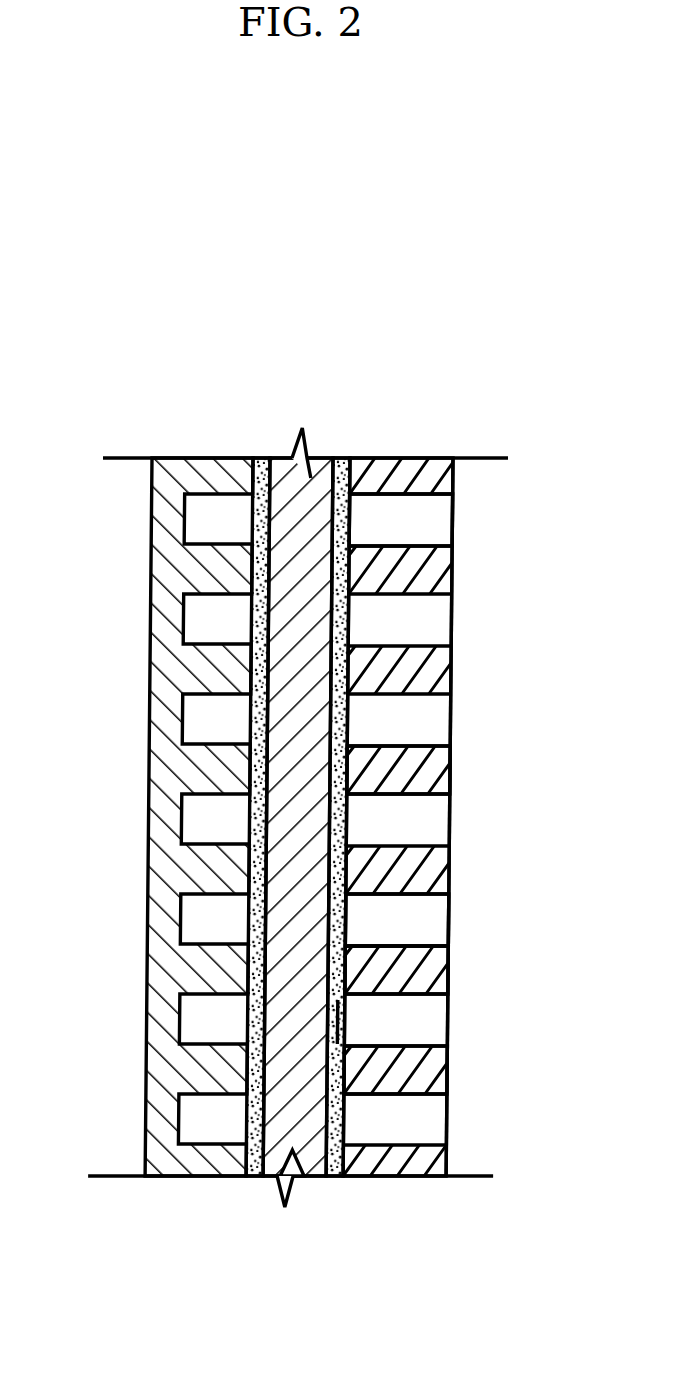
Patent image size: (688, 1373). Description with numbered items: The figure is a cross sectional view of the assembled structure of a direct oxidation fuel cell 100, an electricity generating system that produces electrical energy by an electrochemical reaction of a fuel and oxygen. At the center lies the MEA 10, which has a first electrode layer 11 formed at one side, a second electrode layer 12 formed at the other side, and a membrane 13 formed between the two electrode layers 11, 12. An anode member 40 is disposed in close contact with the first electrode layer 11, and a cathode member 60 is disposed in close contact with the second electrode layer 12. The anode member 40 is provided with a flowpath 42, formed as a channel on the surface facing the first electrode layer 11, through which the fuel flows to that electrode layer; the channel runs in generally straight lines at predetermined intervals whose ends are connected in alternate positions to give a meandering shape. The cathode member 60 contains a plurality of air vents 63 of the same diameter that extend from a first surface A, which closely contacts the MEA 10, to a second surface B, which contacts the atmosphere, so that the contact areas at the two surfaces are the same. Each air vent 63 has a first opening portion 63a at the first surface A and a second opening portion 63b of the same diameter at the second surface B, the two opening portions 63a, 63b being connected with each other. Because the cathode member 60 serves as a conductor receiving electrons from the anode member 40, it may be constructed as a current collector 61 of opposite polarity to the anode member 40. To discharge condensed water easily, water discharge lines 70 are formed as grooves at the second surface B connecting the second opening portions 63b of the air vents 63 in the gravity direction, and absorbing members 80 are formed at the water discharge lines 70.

The direct oxidation fuel cell 100 is at (332, 332).
The MEA 10 is at (302, 875).
The first electrode layer 11 is at (254, 1177).
The second electrode layer 12 is at (351, 864).
The membrane 13 is at (313, 1177).
The anode member 40 is at (135, 817).
The flowpath 42 is at (182, 709).
The cathode member 60 is at (476, 817).
The current collector 61 is at (453, 679).
The air vents 63 is at (453, 622).
The first opening portion 63a is at (452, 940).
The second opening portion 63b is at (452, 912).
The water discharge lines 70 is at (445, 782).
The absorbing members 80 is at (453, 552).
The first surface A is at (343, 1028).
The second surface B is at (452, 1075).